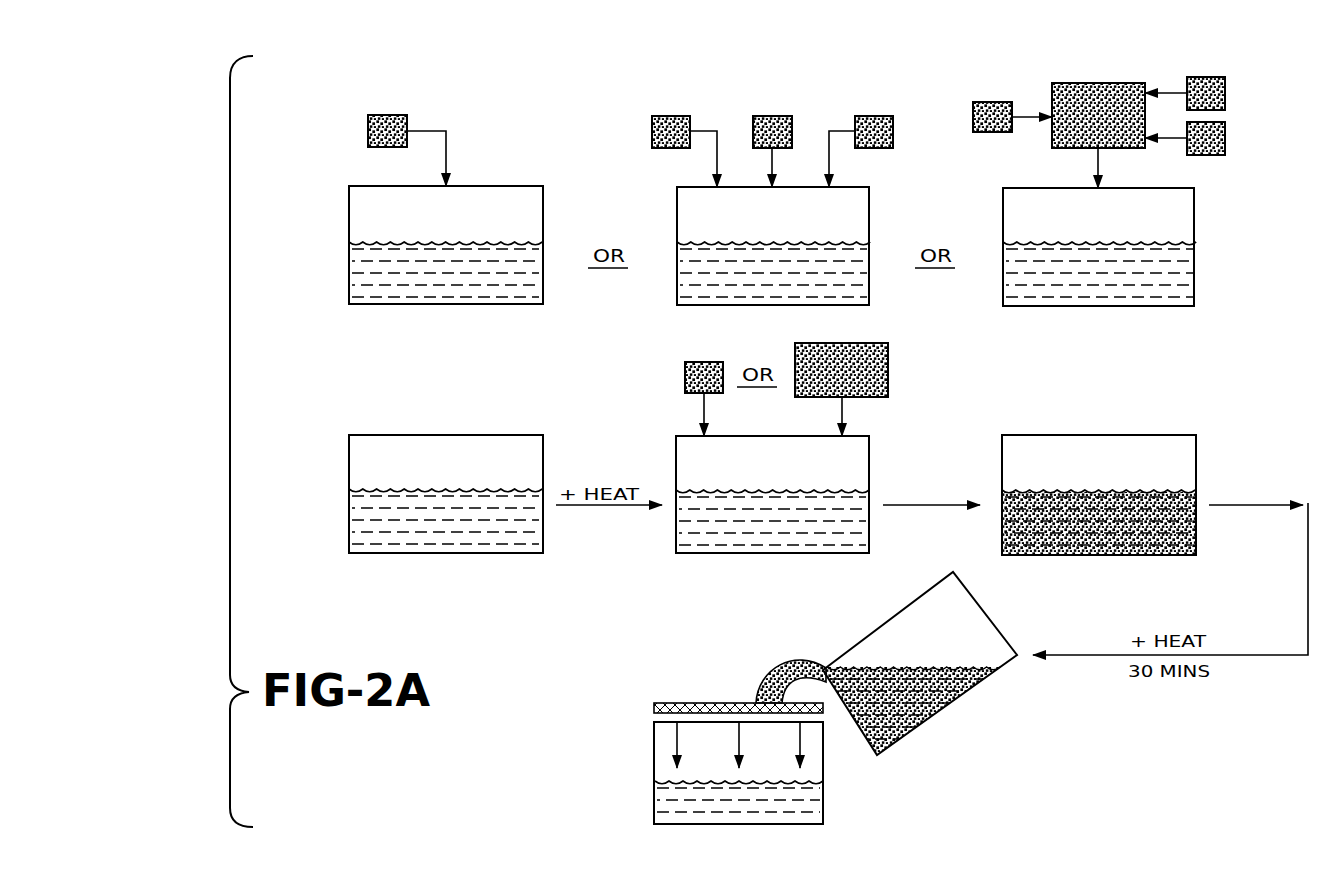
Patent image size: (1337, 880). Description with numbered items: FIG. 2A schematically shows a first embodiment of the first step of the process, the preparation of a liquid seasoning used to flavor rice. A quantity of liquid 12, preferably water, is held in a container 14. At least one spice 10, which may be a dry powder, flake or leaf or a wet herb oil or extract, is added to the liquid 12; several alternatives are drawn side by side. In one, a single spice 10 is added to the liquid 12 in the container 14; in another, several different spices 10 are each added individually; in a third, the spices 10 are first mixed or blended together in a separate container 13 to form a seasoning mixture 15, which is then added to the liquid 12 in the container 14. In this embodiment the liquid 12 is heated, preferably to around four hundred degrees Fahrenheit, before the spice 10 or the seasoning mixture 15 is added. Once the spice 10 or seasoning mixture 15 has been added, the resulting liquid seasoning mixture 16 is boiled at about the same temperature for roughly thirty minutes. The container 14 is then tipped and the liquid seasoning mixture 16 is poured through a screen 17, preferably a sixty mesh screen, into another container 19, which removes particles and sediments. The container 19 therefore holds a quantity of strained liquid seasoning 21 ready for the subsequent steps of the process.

The spice 10 is at (690, 378).
The liquid 12 is at (769, 507).
The separate container 13 is at (1120, 150).
The container 14 is at (983, 605).
The seasoning mixture 15 is at (872, 369).
The liquid seasoning mixture 16 is at (925, 690).
The screen 17 is at (695, 703).
The container 19 is at (654, 745).
The strained liquid seasoning 21 is at (767, 791).